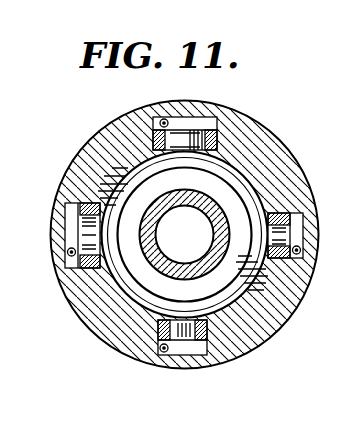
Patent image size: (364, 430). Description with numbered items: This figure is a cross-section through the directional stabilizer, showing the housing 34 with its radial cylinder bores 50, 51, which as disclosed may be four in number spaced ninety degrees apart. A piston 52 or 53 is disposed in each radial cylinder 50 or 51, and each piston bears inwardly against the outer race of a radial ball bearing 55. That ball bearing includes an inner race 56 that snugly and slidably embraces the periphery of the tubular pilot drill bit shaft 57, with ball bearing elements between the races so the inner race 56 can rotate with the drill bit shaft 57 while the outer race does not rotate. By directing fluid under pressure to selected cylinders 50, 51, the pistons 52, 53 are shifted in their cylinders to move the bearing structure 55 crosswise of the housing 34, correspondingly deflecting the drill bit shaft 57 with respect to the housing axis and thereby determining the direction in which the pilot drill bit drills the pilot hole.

The housing 34 is at (287, 300).
The cylinder bore 50 is at (293, 238).
The cylinder bore 51 is at (185, 120).
The piston 52 is at (237, 185).
The piston 53 is at (207, 143).
The radial ball bearing 55 is at (130, 160).
The inner race 56 is at (153, 278).
The pilot drill bit shaft 57 is at (218, 272).